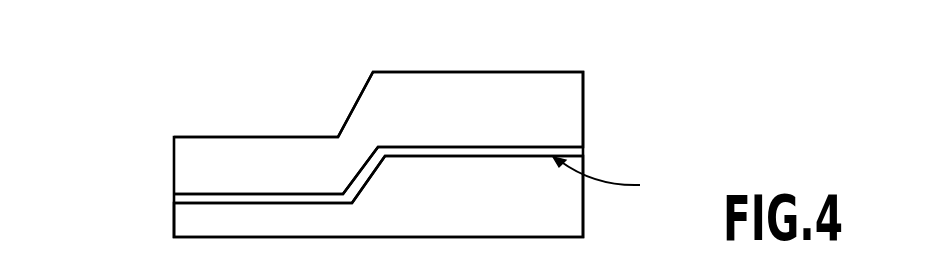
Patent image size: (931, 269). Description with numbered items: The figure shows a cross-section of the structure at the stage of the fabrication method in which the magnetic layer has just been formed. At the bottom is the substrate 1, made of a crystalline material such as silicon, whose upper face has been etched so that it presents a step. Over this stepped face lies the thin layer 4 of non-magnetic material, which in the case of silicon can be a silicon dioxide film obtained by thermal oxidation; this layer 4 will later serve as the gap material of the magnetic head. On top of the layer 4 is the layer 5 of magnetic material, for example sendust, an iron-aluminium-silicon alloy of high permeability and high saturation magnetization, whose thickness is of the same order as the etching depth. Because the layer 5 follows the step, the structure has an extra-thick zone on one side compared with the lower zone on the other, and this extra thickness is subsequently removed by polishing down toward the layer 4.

The substrate 1 is at (563, 224).
The layer of non-magnetic material 4 is at (568, 148).
The layer of magnetic material 5 is at (558, 94).